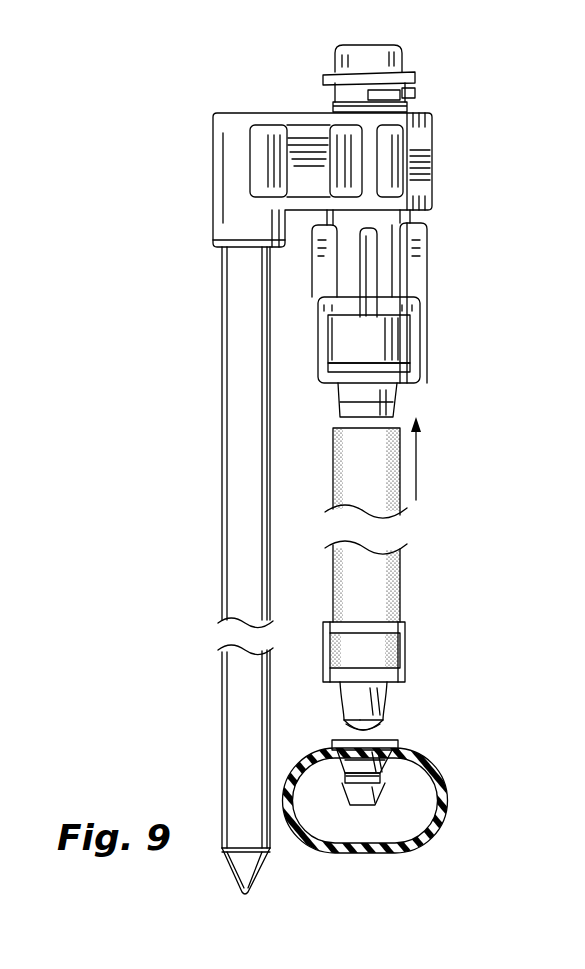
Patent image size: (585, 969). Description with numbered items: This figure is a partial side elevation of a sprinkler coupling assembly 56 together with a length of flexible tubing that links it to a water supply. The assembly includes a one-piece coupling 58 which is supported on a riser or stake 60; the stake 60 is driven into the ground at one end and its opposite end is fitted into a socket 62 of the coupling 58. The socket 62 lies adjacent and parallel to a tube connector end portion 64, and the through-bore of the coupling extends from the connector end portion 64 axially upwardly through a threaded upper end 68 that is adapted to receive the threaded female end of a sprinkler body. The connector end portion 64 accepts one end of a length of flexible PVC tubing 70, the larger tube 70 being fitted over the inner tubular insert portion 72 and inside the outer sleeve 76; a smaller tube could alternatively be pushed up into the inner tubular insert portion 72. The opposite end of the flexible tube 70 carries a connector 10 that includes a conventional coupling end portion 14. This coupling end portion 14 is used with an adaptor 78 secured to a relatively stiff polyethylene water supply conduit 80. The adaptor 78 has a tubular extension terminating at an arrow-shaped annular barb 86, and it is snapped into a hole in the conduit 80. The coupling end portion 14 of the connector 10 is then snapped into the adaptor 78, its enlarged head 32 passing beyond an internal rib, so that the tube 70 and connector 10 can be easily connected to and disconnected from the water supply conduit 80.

The sprinkler coupling assembly 56 is at (214, 93).
The one-piece coupling 58 is at (452, 144).
The socket 62 is at (223, 173).
The threaded upper end 68 is at (405, 63).
The tube connector end portion 64 is at (443, 344).
The outer sleeve 76 is at (318, 342).
The inner tubular insert portion 72 is at (398, 388).
The flexible PVC tubing 70 is at (335, 453).
The connector 10 is at (422, 636).
The coupling end portion 14 is at (403, 693).
The enlarged head 32 is at (388, 720).
The water supply conduit 80 is at (433, 835).
The arrow-shaped annular barb 86 is at (387, 797).
The adaptor 78 is at (333, 783).
The riser or stake 60 is at (233, 370).